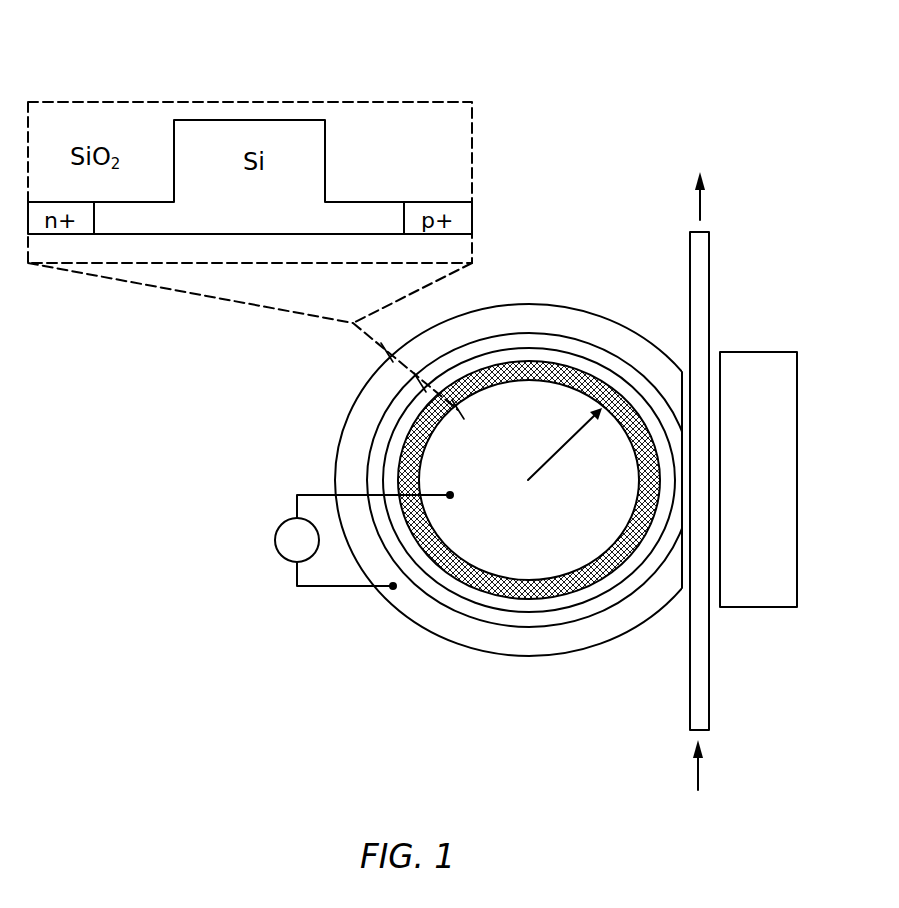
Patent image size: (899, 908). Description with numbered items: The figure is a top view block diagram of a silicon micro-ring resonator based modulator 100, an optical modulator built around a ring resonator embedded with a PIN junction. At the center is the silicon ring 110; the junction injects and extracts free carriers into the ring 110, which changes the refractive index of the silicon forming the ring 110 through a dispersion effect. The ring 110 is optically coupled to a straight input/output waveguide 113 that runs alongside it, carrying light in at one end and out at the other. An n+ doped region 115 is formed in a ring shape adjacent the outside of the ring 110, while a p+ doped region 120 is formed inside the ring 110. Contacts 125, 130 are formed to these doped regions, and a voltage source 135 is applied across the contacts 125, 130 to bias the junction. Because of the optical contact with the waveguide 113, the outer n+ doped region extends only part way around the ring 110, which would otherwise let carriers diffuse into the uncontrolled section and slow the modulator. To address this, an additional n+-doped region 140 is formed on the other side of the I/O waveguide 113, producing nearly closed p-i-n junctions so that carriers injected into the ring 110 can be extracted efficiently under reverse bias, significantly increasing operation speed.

The silicon micro-ring resonator based modulator 100 is at (721, 66).
The ring 110 is at (478, 584).
The input/output waveguide 113 is at (711, 265).
The n+ doped region 115 is at (373, 389).
The p+ doped region 120 is at (577, 558).
The contact 125 is at (450, 494).
The contact 130 is at (393, 590).
The voltage source 135 is at (274, 540).
The additional n+-doped region 140 is at (760, 352).